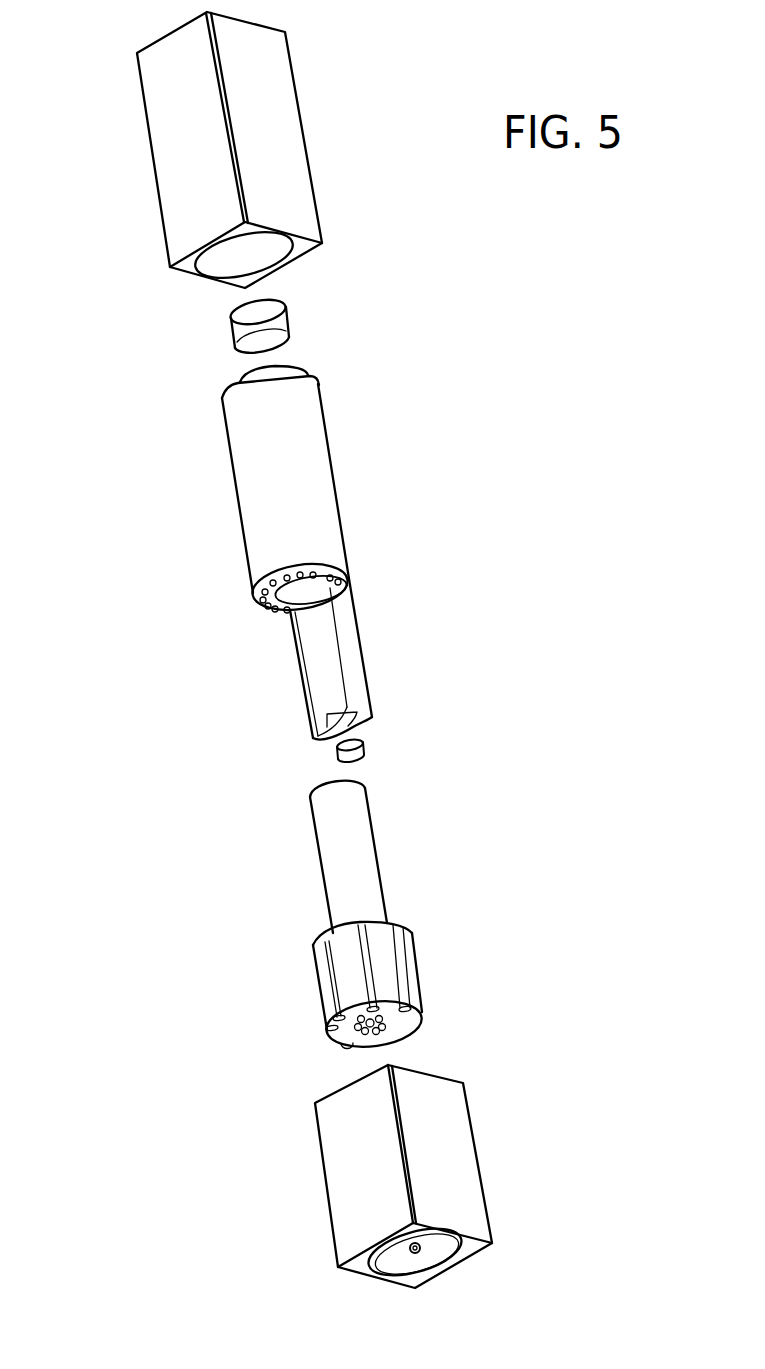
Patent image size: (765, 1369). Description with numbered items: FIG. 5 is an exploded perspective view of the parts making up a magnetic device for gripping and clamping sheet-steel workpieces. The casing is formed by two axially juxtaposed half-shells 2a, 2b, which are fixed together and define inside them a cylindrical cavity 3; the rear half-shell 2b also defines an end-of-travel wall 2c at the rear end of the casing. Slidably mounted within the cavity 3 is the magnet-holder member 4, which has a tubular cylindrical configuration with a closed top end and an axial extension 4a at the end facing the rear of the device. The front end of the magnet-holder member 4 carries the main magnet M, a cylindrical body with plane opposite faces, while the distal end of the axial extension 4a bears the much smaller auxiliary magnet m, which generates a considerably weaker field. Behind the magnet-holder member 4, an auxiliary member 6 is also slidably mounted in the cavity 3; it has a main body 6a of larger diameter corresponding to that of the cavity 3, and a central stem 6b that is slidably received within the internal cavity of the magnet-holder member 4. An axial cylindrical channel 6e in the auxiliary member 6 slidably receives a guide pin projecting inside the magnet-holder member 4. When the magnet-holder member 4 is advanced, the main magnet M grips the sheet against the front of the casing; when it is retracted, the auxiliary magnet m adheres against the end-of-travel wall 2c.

The half-shell 2a is at (224, 159).
The cylindrical cavity 3 is at (281, 248).
The main magnet M is at (230, 340).
The magnet-holder member 4 is at (343, 507).
The axial extension 4a is at (323, 667).
The auxiliary magnet m is at (367, 752).
The auxiliary member 6 is at (366, 917).
The central stem 6b is at (363, 857).
The main body 6a is at (366, 987).
The axial cylindrical channel 6e is at (377, 1033).
The half-shell 2b is at (456, 1181).
The end-of-travel wall 2c is at (442, 1248).